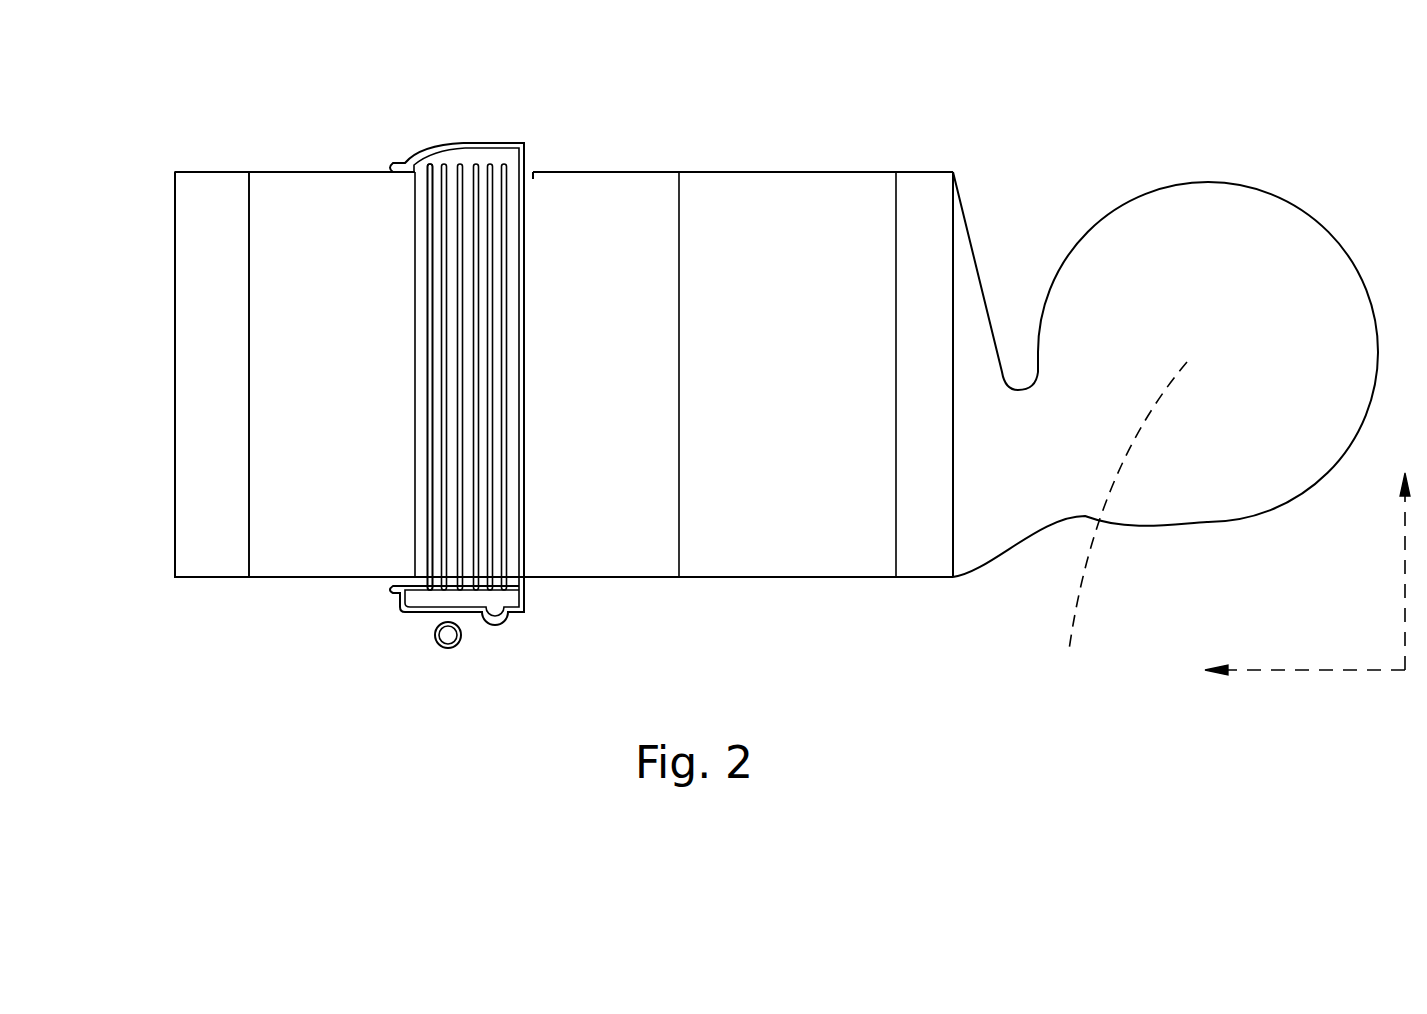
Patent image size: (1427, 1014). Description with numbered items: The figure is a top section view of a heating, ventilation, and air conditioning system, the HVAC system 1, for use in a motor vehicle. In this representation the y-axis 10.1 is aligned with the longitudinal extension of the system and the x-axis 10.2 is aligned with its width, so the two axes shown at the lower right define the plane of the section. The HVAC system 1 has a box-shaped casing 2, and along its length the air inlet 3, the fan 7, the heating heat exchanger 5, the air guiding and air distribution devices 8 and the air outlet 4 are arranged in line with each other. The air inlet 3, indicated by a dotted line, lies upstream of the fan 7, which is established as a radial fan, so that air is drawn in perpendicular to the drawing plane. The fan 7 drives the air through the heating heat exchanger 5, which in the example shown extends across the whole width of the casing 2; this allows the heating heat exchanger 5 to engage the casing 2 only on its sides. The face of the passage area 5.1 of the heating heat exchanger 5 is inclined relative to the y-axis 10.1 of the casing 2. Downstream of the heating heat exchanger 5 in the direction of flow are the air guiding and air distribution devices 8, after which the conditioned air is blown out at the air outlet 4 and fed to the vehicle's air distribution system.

The HVAC system 1 is at (722, 100).
The casing 2 is at (746, 578).
The air inlet 3 is at (1124, 524).
The air outlet 4 is at (167, 213).
The heating heat exchanger 5 is at (458, 162).
The passage area 5.1 is at (425, 505).
The fan 7 is at (1183, 215).
The air guiding and air distribution devices 8 is at (248, 540).
The y-axis 10.1 is at (1340, 672).
The x-axis 10.2 is at (1403, 545).